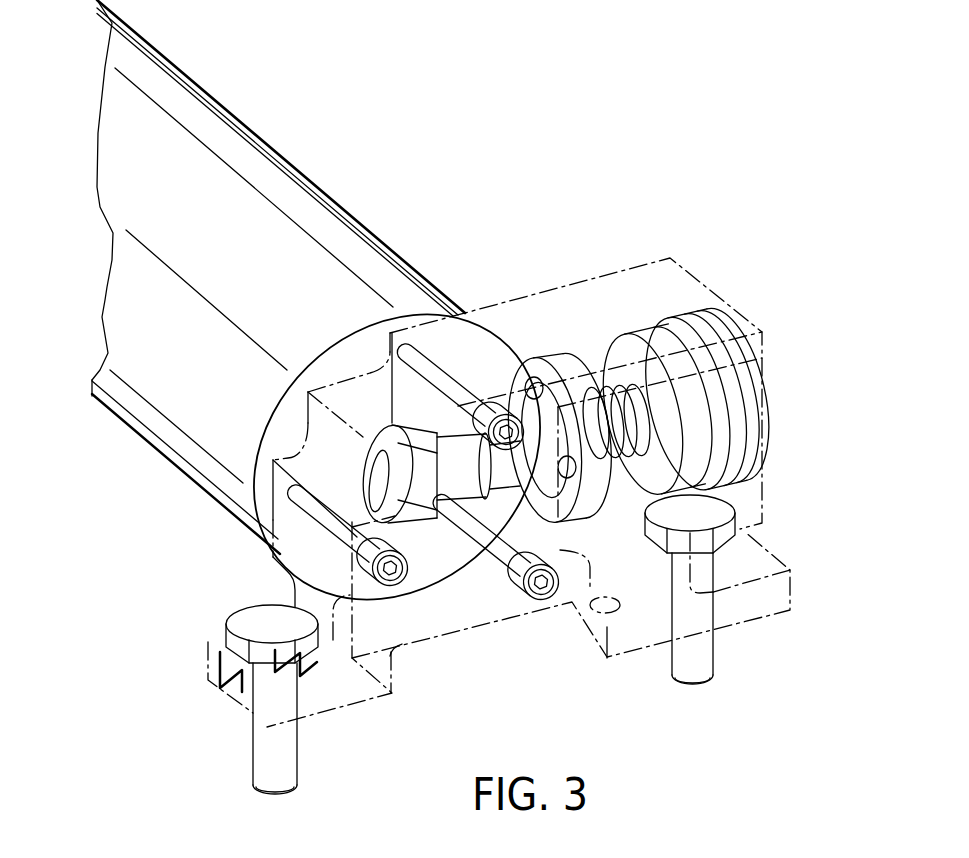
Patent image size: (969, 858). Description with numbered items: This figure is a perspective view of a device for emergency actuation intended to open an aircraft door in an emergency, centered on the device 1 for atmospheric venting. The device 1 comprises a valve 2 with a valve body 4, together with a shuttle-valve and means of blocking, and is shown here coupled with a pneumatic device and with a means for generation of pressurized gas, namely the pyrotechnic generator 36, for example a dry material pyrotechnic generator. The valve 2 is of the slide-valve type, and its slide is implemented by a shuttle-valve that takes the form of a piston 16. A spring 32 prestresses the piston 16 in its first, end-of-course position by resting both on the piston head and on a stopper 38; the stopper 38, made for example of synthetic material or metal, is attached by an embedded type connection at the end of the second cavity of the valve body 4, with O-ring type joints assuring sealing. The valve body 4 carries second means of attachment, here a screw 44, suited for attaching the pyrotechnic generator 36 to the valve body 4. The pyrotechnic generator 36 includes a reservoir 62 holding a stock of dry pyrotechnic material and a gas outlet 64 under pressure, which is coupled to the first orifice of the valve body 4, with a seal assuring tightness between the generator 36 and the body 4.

The device for atmospheric venting 1 is at (503, 126).
The valve 2 is at (537, 260).
The valve body 4 is at (693, 275).
The piston 16 is at (543, 607).
The spring 32 is at (637, 440).
The pyrotechnic generator 36 is at (300, 190).
The stopper 38 is at (747, 400).
The screw 44 is at (400, 580).
The reservoir 62 is at (272, 436).
The gas outlet 64 is at (393, 427).